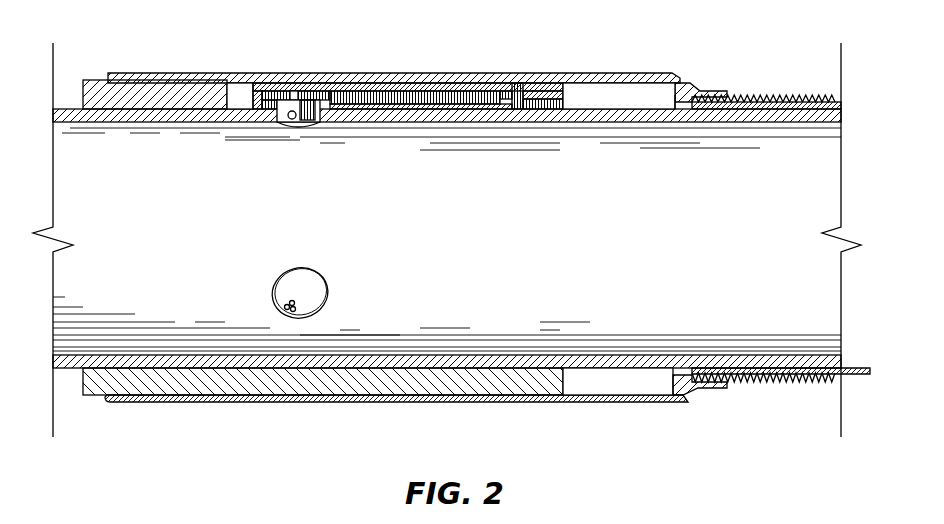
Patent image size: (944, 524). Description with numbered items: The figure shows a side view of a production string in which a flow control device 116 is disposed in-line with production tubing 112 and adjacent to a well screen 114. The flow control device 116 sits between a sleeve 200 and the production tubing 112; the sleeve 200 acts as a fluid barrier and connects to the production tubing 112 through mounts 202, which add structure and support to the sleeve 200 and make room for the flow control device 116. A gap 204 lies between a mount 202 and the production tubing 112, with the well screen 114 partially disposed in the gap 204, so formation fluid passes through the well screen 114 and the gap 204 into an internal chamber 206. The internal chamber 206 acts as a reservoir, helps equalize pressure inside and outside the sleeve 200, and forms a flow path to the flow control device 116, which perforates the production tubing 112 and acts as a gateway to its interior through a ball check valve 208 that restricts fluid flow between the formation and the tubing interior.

The production tubing 112 is at (63, 362).
The well screen 114 is at (780, 95).
The flow control device 116 is at (348, 92).
The sleeve 200 is at (478, 73).
The mounts 202 is at (122, 92).
The gap 204 is at (672, 100).
The internal chamber 206 is at (607, 95).
The ball check valve 208 is at (298, 128).